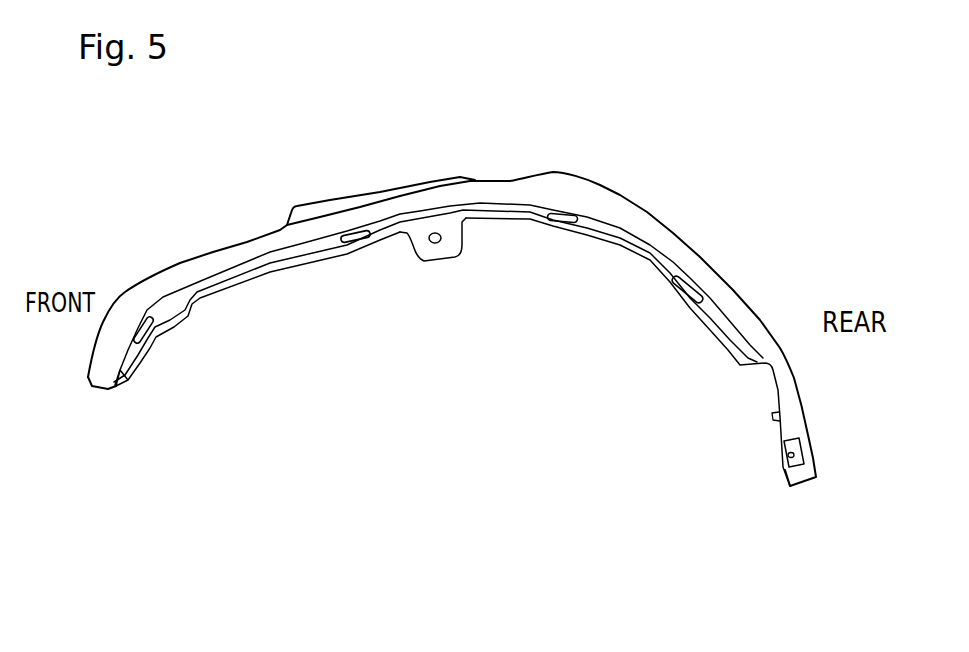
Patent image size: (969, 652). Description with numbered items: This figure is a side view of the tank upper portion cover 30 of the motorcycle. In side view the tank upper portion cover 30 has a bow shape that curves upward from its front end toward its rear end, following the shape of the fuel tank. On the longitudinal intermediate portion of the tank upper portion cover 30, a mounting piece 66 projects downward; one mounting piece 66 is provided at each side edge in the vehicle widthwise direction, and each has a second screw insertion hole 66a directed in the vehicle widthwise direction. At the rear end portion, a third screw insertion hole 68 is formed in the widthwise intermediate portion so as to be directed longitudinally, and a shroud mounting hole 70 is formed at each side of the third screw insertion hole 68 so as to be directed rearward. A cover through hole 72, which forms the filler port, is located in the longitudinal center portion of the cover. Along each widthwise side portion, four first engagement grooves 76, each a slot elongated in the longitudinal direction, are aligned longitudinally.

The tank upper portion cover 30 is at (722, 243).
The cover through hole 72 is at (324, 202).
The first engagement groove 76 is at (150, 317).
The mounting piece 66 is at (428, 258).
The second screw insertion hole 66a is at (441, 240).
The third screw insertion hole 68 is at (818, 448).
The shroud mounting hole 70 is at (785, 463).